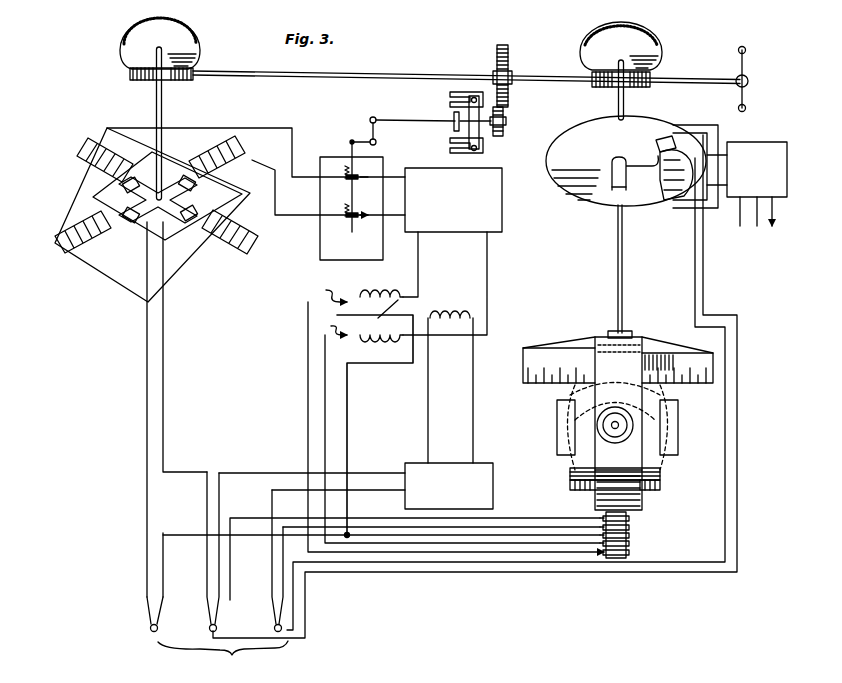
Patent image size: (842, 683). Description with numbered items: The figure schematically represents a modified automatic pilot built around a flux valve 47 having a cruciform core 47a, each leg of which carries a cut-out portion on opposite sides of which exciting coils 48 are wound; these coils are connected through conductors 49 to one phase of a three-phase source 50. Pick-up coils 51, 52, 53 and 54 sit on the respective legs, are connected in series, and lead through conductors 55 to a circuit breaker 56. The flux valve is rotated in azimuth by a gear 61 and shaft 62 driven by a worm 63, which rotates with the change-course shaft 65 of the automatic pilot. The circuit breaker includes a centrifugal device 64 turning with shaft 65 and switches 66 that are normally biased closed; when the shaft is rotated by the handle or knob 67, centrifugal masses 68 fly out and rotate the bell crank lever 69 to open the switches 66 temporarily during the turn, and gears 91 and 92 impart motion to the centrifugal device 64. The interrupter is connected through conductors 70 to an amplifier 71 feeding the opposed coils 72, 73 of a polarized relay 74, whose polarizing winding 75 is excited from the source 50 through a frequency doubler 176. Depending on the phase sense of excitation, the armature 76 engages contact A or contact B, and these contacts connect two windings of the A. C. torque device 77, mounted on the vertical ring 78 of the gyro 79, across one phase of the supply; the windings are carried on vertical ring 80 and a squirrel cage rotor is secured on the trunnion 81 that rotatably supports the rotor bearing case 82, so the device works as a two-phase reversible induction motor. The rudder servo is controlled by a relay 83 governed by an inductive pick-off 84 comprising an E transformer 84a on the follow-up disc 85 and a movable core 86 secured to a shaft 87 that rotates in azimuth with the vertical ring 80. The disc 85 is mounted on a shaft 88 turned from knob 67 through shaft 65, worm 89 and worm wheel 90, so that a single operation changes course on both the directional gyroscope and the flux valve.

The flux valve 47 is at (100, 272).
The cruciform core 47a is at (88, 205).
The exciting coils 48 is at (190, 220).
The conductors 49 is at (150, 392).
The three-phase source 50 is at (217, 573).
The pick-up coil 51 is at (70, 224).
The pick-up coil 52 is at (226, 147).
The pick-up coil 53 is at (104, 150).
The pick-up coil 54 is at (256, 238).
The conductors 55 is at (314, 212).
The circuit breaker 56 is at (347, 156).
The gear 61 is at (121, 45).
The shaft 62 is at (156, 101).
The worm 63 is at (180, 81).
The centrifugal device 64 is at (444, 108).
The change-course shaft 65 is at (434, 74).
The switches 66 is at (362, 190).
The handle or knob 67 is at (750, 68).
The centrifugal masses 68 is at (451, 96).
The bell crank lever 69 is at (368, 122).
The conductors 70 is at (396, 170).
The amplifier 71 is at (503, 226).
The opposed coil 72 is at (378, 291).
The opposed coil 73 is at (386, 343).
The polarized relay 74 is at (420, 303).
The polarizing winding 75 is at (476, 320).
The armature 76 is at (380, 300).
The frequency doubler 176 is at (483, 463).
The A. C. torque device 77 is at (665, 472).
The vertical ring 78 is at (648, 402).
The gyro 79 is at (662, 495).
The vertical ring 80 is at (594, 503).
The trunnion 81 is at (614, 437).
The rotor bearing case 82 is at (570, 466).
The relay 83 is at (757, 142).
The pick-off 84 is at (662, 200).
The E transformer 84a is at (656, 142).
The follow-up disc 85 is at (588, 128).
The movable core 86 is at (654, 160).
The shaft 87 is at (617, 262).
The shaft 88 is at (625, 110).
The worm 89 is at (652, 88).
The worm wheel 90 is at (666, 52).
The gear 91 is at (509, 62).
The gear 92 is at (504, 120).
The contact A is at (328, 291).
The contact B is at (331, 326).